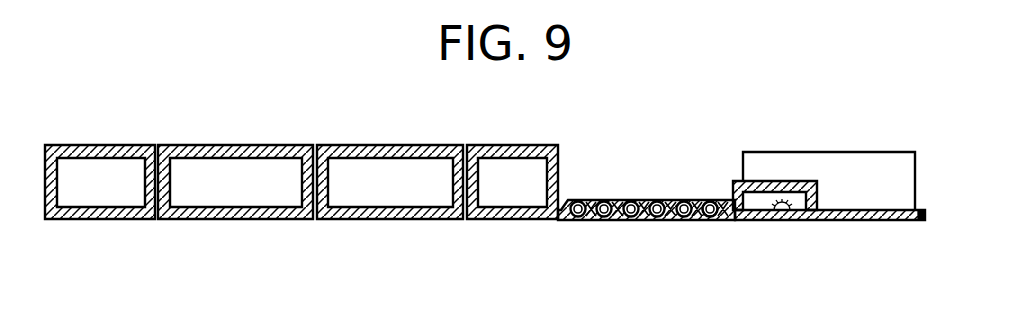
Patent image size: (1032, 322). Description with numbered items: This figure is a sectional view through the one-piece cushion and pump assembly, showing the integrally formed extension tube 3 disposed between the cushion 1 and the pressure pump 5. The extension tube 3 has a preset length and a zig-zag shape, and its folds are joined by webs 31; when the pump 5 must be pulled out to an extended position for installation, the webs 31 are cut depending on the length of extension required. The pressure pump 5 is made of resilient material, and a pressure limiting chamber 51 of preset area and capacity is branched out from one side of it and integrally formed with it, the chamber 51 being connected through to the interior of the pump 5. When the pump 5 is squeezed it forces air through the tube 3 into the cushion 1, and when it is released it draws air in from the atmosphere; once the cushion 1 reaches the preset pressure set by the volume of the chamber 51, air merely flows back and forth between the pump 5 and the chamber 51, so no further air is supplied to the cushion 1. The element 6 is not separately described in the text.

The cushion 1 is at (381, 146).
The extension tube 3 is at (657, 200).
The webs 31 is at (643, 222).
The connecting element 6 is at (710, 200).
The pressure pump 5 is at (883, 152).
The pressure limiting chamber 51 is at (818, 200).